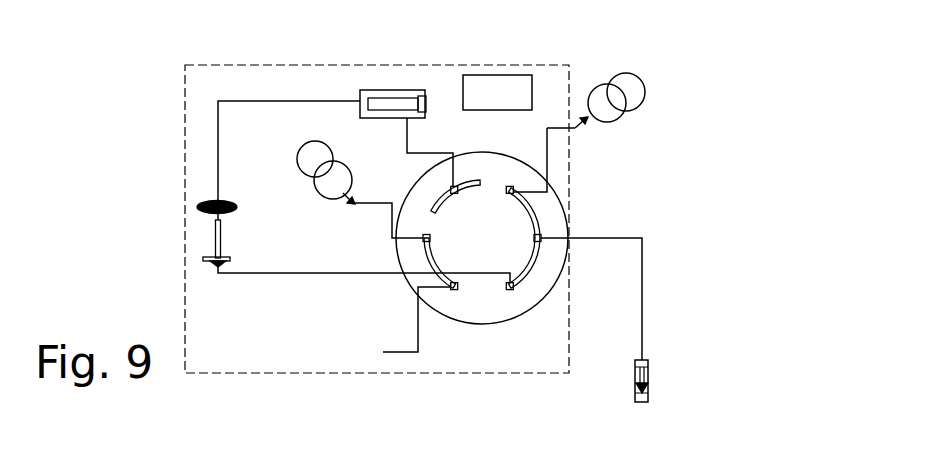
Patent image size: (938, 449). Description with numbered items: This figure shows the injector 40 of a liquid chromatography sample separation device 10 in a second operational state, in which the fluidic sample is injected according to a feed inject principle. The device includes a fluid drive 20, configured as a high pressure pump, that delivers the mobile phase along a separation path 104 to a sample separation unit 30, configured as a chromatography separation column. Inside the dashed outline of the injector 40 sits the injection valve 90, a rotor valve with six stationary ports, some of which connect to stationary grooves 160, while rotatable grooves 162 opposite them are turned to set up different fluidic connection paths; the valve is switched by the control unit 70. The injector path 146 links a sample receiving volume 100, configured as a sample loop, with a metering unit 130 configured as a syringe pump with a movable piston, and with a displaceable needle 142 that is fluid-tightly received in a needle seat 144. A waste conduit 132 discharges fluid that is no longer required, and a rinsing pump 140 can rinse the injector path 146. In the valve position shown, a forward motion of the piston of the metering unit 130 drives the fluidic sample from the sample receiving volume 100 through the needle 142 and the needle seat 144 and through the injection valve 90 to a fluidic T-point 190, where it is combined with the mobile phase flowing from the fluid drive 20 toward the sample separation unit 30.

The liquid chromatography sample separation device 10 is at (693, 71).
The fluid drive 20 is at (628, 72).
The sample separation unit 30 is at (648, 373).
The injector 40 is at (184, 64).
The control unit 70 is at (497, 92).
The injection valve 90 is at (538, 307).
The sample receiving volume 100 is at (197, 204).
The separation path 104 is at (549, 148).
The metering unit 130 is at (388, 90).
The waste conduit 132 is at (416, 322).
The rinsing pump 140 is at (314, 141).
The needle 142 is at (213, 238).
The needle seat 144 is at (206, 262).
The injector path 146 is at (228, 100).
The stationary grooves 160 is at (525, 191).
The rotatable grooves 162 is at (567, 218).
The fluidic T-point 190 is at (549, 243).